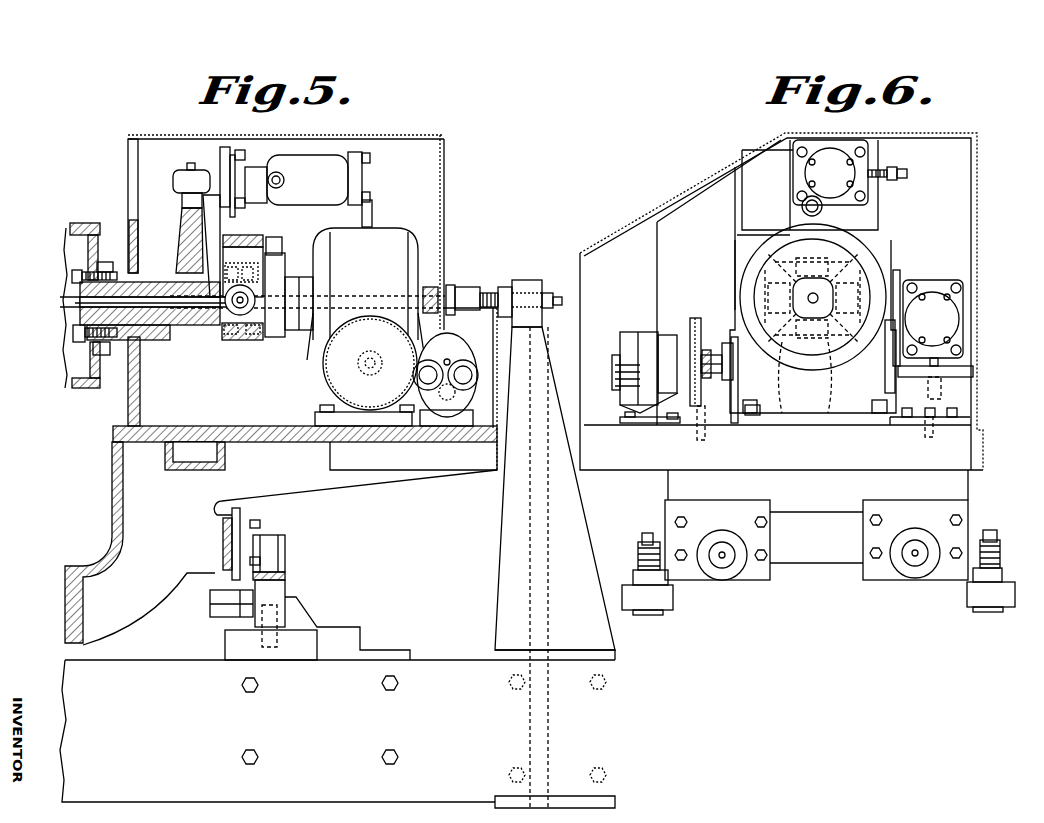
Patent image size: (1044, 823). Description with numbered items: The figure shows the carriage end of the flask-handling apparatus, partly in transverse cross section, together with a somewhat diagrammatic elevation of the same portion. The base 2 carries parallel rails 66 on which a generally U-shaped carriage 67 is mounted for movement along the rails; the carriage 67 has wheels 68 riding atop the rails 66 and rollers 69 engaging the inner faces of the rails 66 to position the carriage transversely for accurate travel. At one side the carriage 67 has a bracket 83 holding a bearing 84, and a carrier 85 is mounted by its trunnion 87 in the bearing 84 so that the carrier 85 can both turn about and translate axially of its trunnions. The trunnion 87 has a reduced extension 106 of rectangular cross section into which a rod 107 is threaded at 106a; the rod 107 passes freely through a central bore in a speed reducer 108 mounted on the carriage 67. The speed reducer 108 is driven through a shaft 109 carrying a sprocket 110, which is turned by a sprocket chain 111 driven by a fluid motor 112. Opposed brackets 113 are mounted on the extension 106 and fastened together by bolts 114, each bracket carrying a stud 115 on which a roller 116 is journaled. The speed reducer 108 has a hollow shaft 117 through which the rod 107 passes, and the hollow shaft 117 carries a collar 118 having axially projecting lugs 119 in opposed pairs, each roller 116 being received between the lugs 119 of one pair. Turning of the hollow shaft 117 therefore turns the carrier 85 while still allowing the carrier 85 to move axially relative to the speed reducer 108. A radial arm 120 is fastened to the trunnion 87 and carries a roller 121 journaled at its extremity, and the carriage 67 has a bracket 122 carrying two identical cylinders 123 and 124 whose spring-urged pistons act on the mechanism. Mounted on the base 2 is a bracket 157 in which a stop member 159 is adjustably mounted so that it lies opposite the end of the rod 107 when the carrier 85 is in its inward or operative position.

In FIG. 5, the base 2 is at (193, 676).
In FIG. 5, the rails 66 is at (288, 595).
In FIG. 5, the carriage 67 is at (112, 548).
In FIG. 6, the carriage 67 is at (820, 460).
In FIG. 5, the wheels 68 is at (273, 545).
In FIG. 6, the wheels 68 is at (735, 570).
In FIG. 5, the rollers 69 is at (213, 612).
In FIG. 6, the rollers 69 is at (672, 598).
In FIG. 5, the bracket 83 is at (133, 393).
In FIG. 5, the bearing 84 is at (83, 323).
In FIG. 5, the carrier 85 is at (72, 230).
In FIG. 5, the trunnion 87 is at (82, 303).
In FIG. 5, the reduced extension 106 is at (228, 335).
In FIG. 6, the reduced extension 106 is at (802, 225).
In FIG. 5, the threaded connection 106a is at (262, 287).
In FIG. 5, the rod 107 is at (497, 258).
In FIG. 6, the rod 107 is at (810, 297).
In FIG. 5, the speed reducer 108 is at (428, 220).
In FIG. 6, the speed reducer 108 is at (862, 238).
In FIG. 5, the shaft 109 is at (385, 345).
In FIG. 6, the shaft 109 is at (707, 368).
In FIG. 5, the sprocket 110 is at (383, 400).
In FIG. 6, the sprocket 110 is at (707, 316).
In FIG. 5, the sprocket chain 111 is at (323, 375).
In FIG. 6, the sprocket chain 111 is at (714, 320).
In FIG. 5, the fluid motor 112 is at (450, 407).
In FIG. 6, the fluid motor 112 is at (643, 340).
In FIG. 6, the brackets 113 is at (943, 259).
In FIG. 6, the bolts 114 is at (880, 400).
In FIG. 6, the stud 115 is at (840, 362).
In FIG. 5, the roller 116 is at (240, 348).
In FIG. 6, the roller 116 is at (947, 275).
In FIG. 5, the hollow shaft 117 is at (300, 348).
In FIG. 5, the collar 118 is at (288, 343).
In FIG. 6, the collar 118 is at (805, 370).
In FIG. 5, the lugs 119 is at (240, 262).
In FIG. 6, the lugs 119 is at (768, 268).
In FIG. 5, the radial arm 120 is at (186, 233).
In FIG. 5, the roller 121 is at (183, 180).
In FIG. 6, the bracket 122 is at (967, 181).
In FIG. 5, the cylinder 123 is at (335, 172).
In FIG. 6, the cylinder 123 is at (822, 174).
In FIG. 6, the cylinder 124 is at (1030, 326).
In FIG. 5, the bracket 157 is at (510, 507).
In FIG. 5, the stop member 159 is at (527, 276).